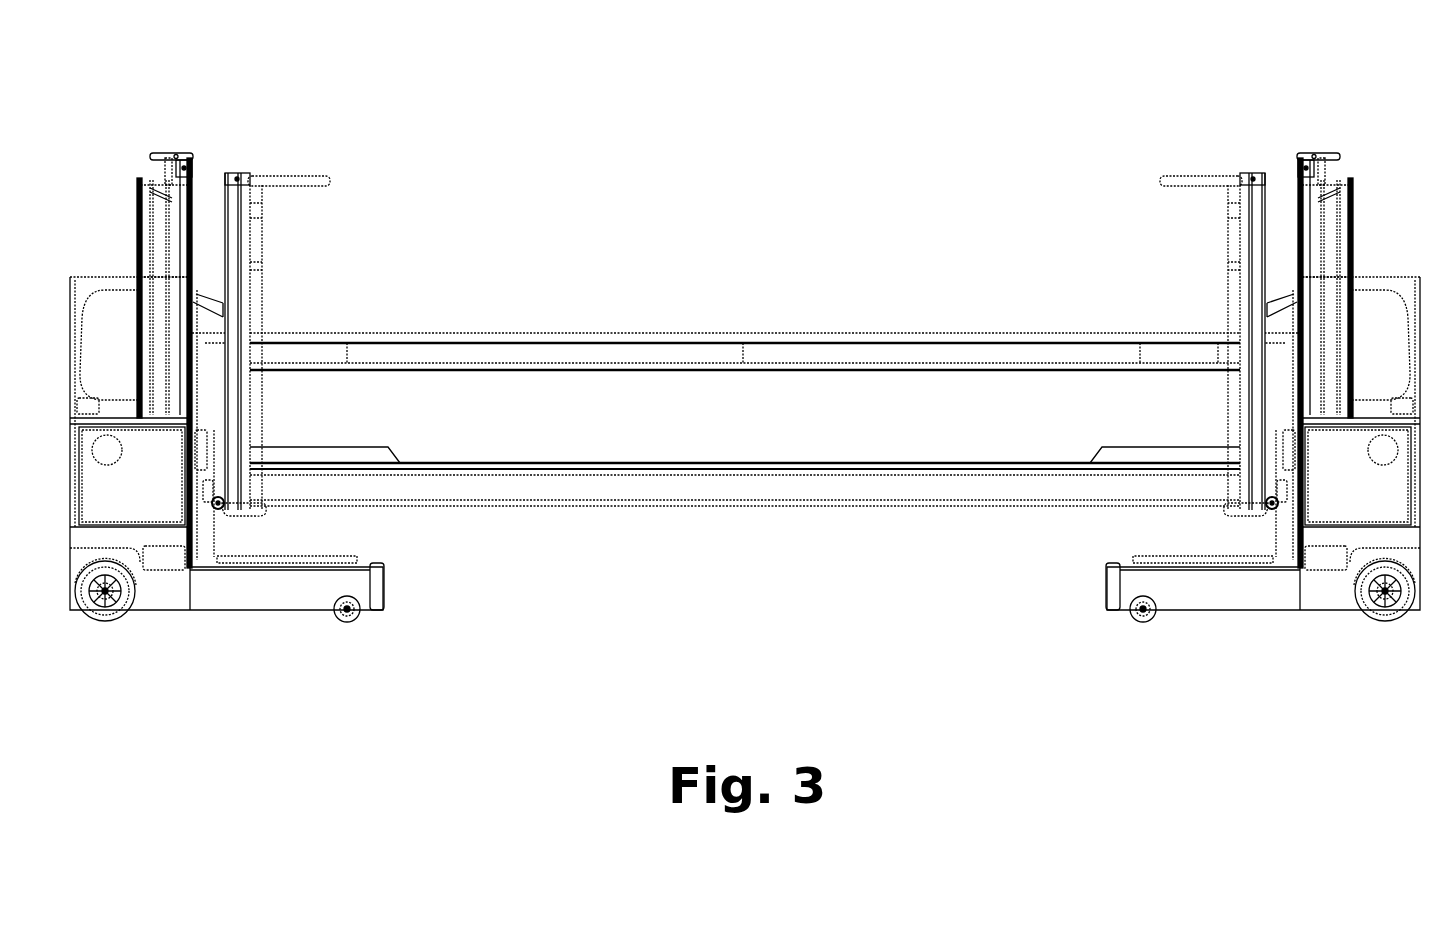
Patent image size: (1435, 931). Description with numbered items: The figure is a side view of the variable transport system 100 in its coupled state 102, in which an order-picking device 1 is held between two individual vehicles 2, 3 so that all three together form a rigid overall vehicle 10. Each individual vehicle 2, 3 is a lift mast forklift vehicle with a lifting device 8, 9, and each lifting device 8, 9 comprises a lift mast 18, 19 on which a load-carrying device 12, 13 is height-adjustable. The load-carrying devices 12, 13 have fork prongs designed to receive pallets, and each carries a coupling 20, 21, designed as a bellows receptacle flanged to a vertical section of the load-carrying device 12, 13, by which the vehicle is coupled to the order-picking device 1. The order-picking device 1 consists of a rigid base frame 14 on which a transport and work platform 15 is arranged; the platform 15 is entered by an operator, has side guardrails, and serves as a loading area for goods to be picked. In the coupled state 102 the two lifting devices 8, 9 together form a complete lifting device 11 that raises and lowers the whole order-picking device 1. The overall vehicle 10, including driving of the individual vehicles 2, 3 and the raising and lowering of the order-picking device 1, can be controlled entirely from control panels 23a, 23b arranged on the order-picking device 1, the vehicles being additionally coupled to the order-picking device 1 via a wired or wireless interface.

The variable transport system 100 is at (585, 175).
The coupled state 102 is at (735, 165).
The order-picking device 1 is at (675, 318).
The transport and work platform 15 is at (773, 457).
The rigid base frame 14 is at (652, 500).
The individual vehicle 2 is at (84, 243).
The individual vehicle 3 is at (1378, 209).
The lifting device 8 is at (220, 140).
The lifting device 9 is at (1286, 145).
The lift mast 18 is at (144, 165).
The lift mast 19 is at (1338, 146).
The complete lifting device 11 is at (350, 146).
The rigid overall vehicle 10 is at (1062, 213).
The control panel 23a is at (276, 300).
The control panel 23b is at (1215, 307).
The load-carrying device 12 is at (270, 548).
The load-carrying device 13 is at (1150, 552).
The coupling 20 is at (218, 505).
The coupling 21 is at (1268, 505).